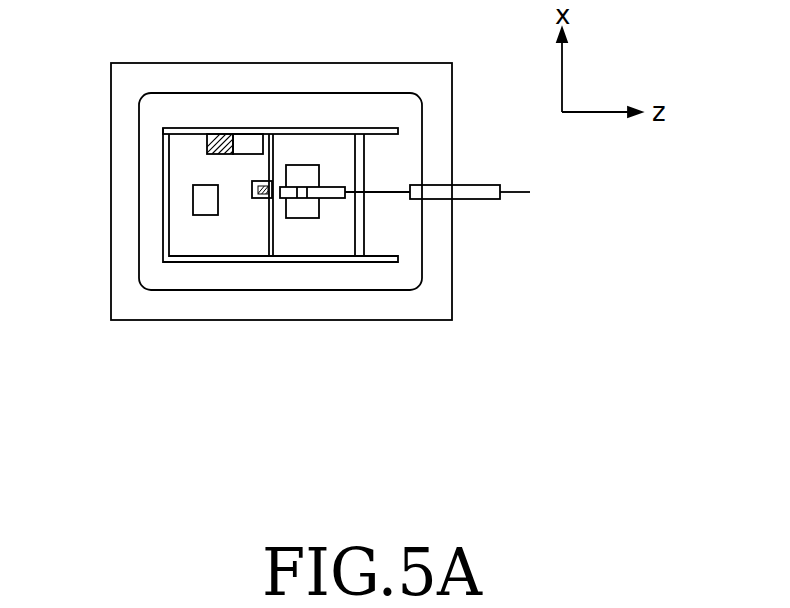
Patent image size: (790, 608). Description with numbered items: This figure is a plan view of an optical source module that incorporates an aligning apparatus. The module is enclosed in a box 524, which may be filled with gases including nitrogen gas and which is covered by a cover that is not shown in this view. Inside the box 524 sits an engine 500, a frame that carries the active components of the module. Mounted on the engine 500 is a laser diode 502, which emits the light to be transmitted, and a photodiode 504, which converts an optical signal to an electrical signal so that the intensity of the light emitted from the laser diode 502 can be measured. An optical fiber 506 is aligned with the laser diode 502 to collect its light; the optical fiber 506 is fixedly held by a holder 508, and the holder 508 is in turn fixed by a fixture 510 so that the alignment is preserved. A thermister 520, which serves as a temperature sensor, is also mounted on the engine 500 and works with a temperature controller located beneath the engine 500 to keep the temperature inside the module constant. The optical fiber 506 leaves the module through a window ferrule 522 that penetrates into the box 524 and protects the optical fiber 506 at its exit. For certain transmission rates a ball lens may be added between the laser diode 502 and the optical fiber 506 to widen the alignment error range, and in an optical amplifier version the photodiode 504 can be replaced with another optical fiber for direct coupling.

The engine 500 is at (177, 250).
The laser diode 502 is at (265, 198).
The photodiode 504 is at (193, 202).
The optical fiber 506 is at (380, 192).
The holder 508 is at (337, 140).
The fixture 510 is at (305, 218).
The thermister 520 is at (258, 134).
The window ferrule 522 is at (487, 200).
The box 524 is at (386, 296).